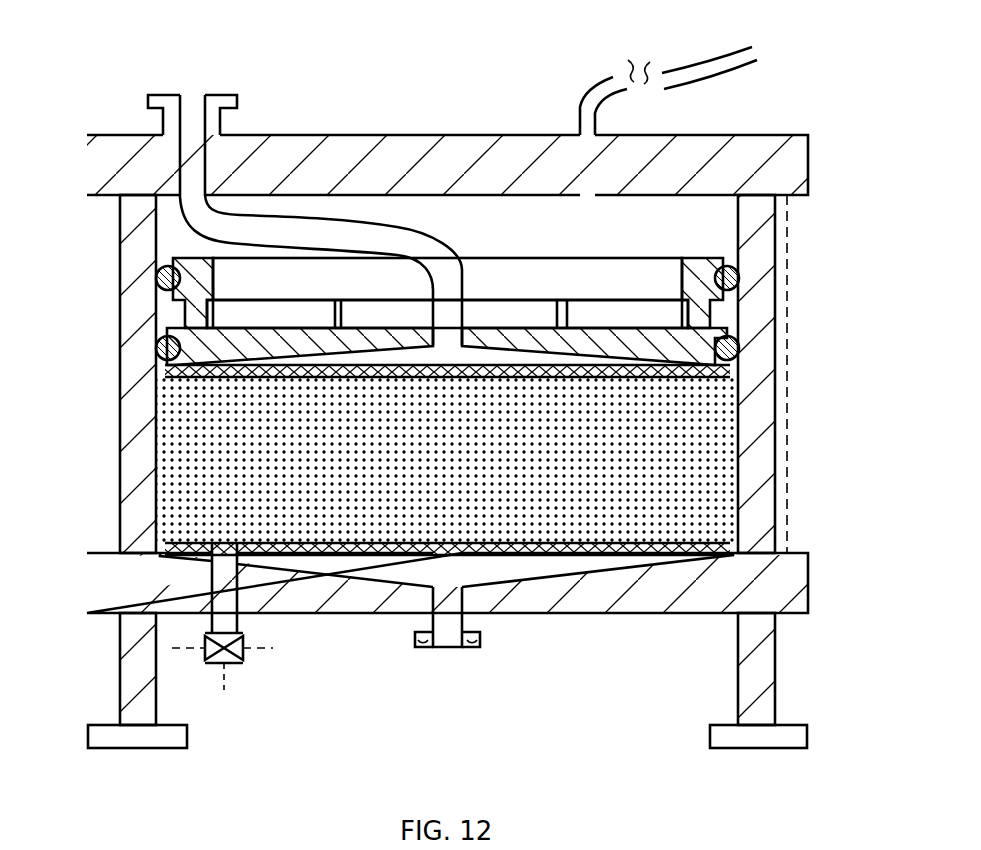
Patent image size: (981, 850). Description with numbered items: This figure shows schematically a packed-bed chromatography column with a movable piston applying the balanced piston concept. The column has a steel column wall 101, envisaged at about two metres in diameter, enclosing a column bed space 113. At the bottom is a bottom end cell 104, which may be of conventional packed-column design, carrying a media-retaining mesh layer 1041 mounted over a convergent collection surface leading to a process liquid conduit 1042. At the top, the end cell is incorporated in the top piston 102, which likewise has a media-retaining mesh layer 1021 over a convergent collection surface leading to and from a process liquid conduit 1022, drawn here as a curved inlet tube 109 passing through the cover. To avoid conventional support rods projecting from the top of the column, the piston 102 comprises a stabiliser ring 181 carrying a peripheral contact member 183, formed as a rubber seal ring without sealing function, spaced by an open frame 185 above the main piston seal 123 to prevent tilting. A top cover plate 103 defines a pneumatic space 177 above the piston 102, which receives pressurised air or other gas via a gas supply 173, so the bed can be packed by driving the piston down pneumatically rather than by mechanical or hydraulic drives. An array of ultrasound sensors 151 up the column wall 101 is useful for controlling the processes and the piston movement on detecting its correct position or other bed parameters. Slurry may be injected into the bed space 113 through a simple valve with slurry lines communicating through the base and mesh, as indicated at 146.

The gas supply 173 is at (757, 52).
The top cover plate 103 is at (747, 148).
The inlet tube 109 is at (357, 232).
The stabiliser ring 181 is at (490, 275).
The pneumatic space 177 is at (662, 243).
The peripheral contact member 183 is at (160, 282).
The open frame 185 is at (187, 320).
The lower sealing ring 123 is at (197, 352).
The top piston 102 is at (237, 378).
The process liquid conduit 1022 is at (475, 328).
The media-retaining mesh layer 1021 is at (636, 382).
The column wall 101 is at (757, 458).
The column bed space 113 is at (330, 468).
The media-retaining mesh layer 1041 is at (640, 535).
The bottom end cell 104 is at (590, 600).
The process liquid conduit 1042 is at (415, 635).
The valve with slurry lines 146 is at (238, 665).
The ultrasound sensors 151 is at (810, 308).